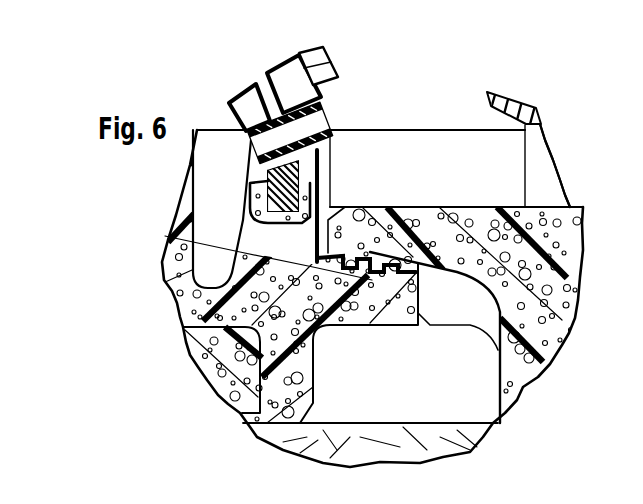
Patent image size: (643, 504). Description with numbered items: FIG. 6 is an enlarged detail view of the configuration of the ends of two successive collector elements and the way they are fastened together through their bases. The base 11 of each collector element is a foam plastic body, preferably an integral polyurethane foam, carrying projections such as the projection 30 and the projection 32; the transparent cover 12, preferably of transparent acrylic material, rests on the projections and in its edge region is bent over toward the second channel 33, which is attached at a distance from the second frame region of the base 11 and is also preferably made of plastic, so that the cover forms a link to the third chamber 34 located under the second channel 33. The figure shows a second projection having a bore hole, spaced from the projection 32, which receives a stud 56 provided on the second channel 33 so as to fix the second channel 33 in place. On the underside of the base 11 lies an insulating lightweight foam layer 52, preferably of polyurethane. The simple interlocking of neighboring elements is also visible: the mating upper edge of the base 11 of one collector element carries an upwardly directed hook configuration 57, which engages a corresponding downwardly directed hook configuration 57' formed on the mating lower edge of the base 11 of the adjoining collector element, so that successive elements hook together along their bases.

The base 11 is at (195, 298).
The transparent cover 12 is at (514, 101).
The projection 30 is at (555, 156).
The projection 32 is at (252, 232).
The second channel 33 is at (288, 85).
The third chamber 34 is at (228, 118).
The insulating lightweight foam layer 52 is at (200, 363).
The stud 56 is at (252, 191).
The upwardly directed hook configuration 57 is at (400, 337).
The downwardly directed hook configuration 57' is at (366, 211).